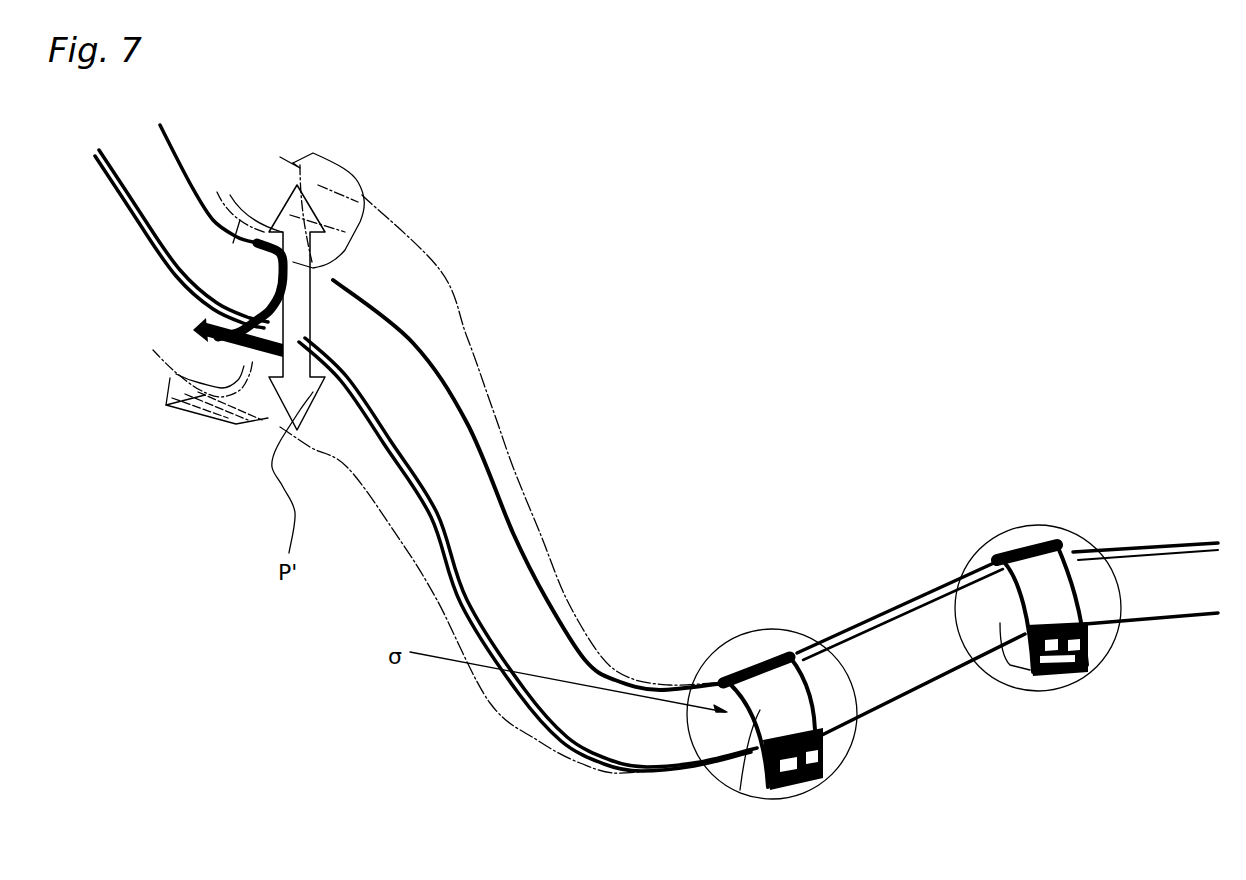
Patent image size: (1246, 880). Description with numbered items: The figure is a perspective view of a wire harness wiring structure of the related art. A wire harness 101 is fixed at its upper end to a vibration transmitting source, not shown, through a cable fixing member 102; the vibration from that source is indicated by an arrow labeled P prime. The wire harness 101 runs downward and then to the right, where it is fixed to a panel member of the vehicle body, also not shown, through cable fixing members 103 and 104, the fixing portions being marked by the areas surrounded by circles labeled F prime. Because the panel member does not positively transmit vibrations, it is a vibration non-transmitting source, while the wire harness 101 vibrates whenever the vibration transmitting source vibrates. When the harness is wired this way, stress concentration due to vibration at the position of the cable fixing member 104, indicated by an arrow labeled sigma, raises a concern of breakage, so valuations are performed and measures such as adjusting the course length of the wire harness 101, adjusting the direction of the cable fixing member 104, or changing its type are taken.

The wire harness 101 is at (466, 428).
The cable fixing member 102 is at (280, 360).
The cable fixing member 103 is at (1053, 600).
The cable fixing member 104 is at (762, 705).